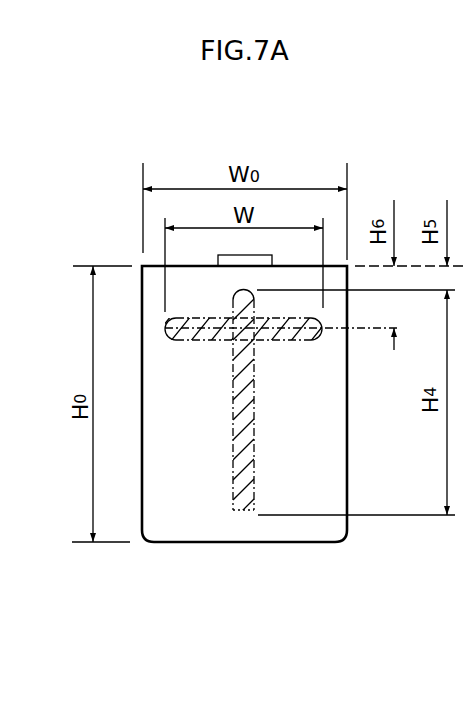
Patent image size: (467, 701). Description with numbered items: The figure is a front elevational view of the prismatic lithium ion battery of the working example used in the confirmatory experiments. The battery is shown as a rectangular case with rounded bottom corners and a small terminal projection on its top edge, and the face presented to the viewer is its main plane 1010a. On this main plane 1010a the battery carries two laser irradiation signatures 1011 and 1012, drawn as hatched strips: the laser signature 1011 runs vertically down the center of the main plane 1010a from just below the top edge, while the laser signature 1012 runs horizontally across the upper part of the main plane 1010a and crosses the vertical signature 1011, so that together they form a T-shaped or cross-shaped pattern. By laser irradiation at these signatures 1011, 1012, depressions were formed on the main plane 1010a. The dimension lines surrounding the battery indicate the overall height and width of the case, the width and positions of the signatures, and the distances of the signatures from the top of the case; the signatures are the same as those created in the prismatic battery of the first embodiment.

The main plane 1010a is at (146, 280).
The laser irradiation signature 1011 is at (233, 510).
The laser irradiation signature 1012 is at (192, 337).